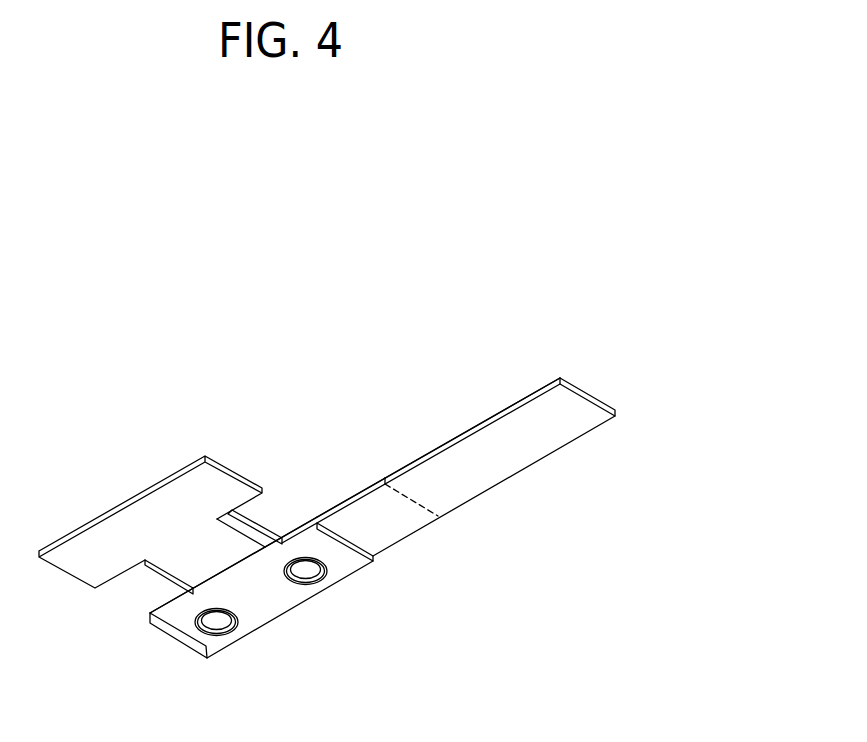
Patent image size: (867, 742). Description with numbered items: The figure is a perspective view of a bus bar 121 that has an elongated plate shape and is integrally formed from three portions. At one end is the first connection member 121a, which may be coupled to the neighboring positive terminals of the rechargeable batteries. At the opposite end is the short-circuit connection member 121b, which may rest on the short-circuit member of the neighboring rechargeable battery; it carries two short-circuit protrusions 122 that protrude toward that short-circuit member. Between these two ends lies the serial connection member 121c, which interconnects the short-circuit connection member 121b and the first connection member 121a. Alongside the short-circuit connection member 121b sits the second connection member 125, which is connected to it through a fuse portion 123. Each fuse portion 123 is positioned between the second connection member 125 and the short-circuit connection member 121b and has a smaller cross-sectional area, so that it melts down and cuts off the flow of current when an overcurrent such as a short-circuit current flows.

The bus bar 121 is at (382, 509).
The first connection member 121a is at (482, 475).
The short-circuit connection member 121b is at (257, 610).
The serial connection member 121c is at (395, 523).
The short-circuit protrusion 122 is at (217, 635).
The fuse portion 123 is at (254, 532).
The second connection member 125 is at (108, 512).